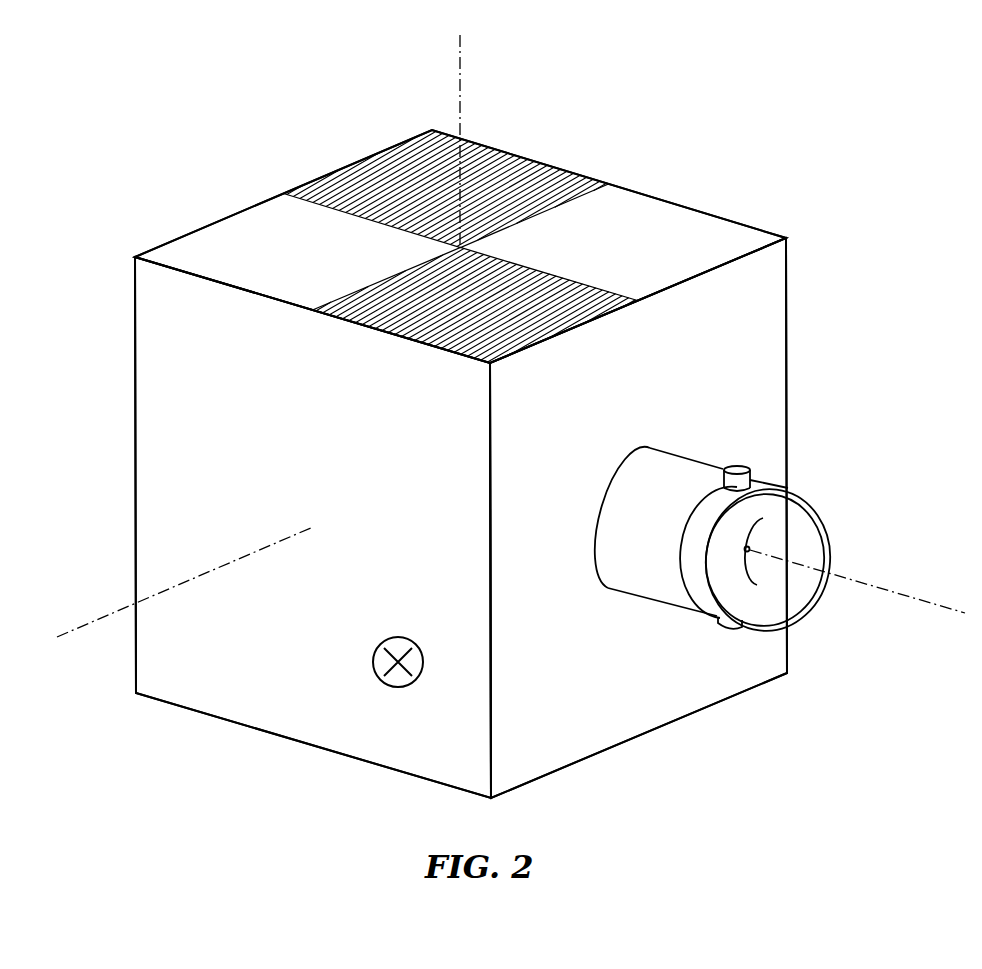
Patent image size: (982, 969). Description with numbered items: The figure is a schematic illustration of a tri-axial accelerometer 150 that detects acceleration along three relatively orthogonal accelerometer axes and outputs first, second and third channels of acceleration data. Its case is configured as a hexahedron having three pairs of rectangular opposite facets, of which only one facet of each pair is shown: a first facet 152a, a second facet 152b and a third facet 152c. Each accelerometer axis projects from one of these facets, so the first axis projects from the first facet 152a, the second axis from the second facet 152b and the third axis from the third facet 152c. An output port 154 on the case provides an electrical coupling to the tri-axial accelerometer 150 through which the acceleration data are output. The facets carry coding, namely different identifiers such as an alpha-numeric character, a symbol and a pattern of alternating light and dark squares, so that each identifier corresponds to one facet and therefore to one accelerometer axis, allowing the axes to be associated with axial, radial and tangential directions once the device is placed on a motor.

The tri-axial accelerometer 150 is at (800, 140).
The first facet 152a is at (732, 372).
The second facet 152b is at (247, 208).
The third facet 152c is at (292, 680).
The output port 154 is at (805, 508).